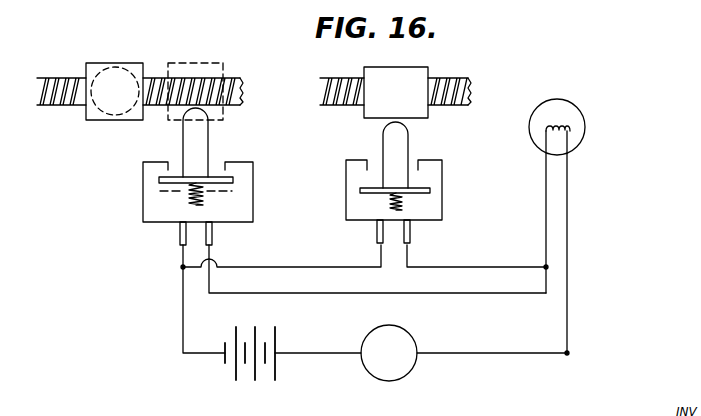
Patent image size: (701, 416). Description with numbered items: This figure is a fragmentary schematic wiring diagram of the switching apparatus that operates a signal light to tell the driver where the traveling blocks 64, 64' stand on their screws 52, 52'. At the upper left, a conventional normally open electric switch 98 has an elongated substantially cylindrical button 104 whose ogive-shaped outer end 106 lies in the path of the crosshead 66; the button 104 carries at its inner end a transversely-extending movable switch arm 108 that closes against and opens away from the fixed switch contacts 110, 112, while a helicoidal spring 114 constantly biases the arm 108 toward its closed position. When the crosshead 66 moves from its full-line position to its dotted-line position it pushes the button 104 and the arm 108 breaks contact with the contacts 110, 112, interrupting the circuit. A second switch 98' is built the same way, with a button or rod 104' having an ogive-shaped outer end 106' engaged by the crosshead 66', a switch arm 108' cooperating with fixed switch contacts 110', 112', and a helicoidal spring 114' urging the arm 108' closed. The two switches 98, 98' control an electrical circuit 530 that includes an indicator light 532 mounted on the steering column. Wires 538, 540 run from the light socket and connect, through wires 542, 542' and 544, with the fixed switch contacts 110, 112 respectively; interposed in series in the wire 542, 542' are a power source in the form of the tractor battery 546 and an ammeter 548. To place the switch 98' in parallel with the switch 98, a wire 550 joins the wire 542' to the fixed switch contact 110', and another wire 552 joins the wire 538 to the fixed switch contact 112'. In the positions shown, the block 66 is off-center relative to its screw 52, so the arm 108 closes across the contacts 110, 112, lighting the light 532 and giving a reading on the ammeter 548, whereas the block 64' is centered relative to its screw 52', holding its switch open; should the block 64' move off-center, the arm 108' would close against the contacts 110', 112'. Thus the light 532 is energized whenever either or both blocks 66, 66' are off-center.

The screw 52 is at (140, 79).
The crosshead 66 is at (167, 79).
The traveling block 64 is at (144, 48).
The electric switch 98 is at (199, 175).
The button 104 is at (178, 142).
The ogive-shaped outer end 106 is at (249, 113).
The movable switch arm 108 is at (234, 181).
The fixed switch contact 110 is at (170, 203).
The fixed switch contact 112 is at (262, 163).
The helicoidal spring 114 is at (244, 200).
The screw 52' is at (412, 78).
The traveling block 64' is at (388, 83).
The crosshead 66' is at (431, 56).
The electric switch 98' is at (403, 179).
The button or rod 104' is at (418, 155).
The ogive-shaped outer end 106' is at (445, 124).
The switch arm 108' is at (429, 178).
The fixed switch contact 110' is at (374, 201).
The fixed switch contact 112' is at (459, 157).
The helicoidal spring 114' is at (443, 200).
The electrical circuit 530 is at (355, 273).
The indicator light 532 is at (587, 132).
The wire 538 is at (545, 223).
The wire 540 is at (567, 220).
The wire 542 is at (318, 378).
The wire 542' is at (184, 310).
The wire 544 is at (309, 293).
The tractor battery 546 is at (253, 386).
The ammeter 548 is at (393, 382).
The wire 550 is at (290, 267).
The wire 552 is at (462, 267).